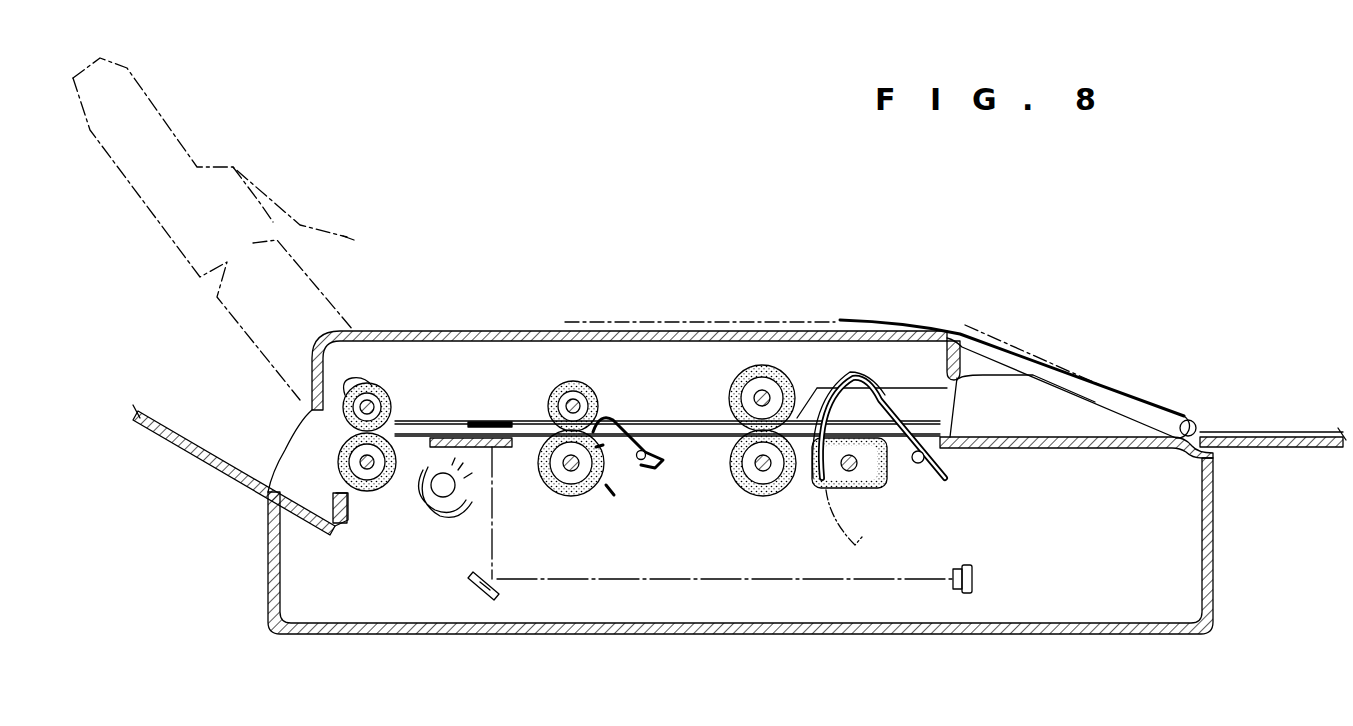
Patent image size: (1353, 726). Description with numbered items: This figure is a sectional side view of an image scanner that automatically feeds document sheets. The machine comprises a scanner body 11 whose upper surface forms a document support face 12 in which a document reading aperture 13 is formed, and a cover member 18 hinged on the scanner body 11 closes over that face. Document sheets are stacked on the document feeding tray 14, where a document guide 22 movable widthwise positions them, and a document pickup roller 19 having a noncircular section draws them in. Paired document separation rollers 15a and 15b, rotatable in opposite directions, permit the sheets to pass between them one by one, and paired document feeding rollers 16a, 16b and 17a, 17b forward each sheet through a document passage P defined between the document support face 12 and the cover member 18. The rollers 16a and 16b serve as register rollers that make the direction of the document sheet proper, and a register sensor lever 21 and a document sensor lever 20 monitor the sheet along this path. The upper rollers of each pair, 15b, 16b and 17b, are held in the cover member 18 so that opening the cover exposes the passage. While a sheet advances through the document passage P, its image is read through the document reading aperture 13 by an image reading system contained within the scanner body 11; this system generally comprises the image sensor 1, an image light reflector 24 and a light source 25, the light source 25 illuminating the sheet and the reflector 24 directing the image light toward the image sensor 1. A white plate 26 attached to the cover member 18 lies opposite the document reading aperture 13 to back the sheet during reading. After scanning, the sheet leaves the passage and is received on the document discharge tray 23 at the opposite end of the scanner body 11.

The image sensor 1 is at (975, 578).
The scanner body 11 is at (1230, 592).
The document support face 12 is at (680, 432).
The document reading aperture 13 is at (457, 424).
The document feeding tray 14 is at (1262, 435).
The document separation roller 15a is at (763, 496).
The document separation roller 15b is at (762, 366).
The document feeding roller 16a is at (560, 496).
The document feeding roller 16b is at (583, 381).
The document feeding roller 17a is at (338, 462).
The document feeding roller 17b is at (343, 406).
The cover member 18 is at (393, 328).
The document pickup roller 19 is at (866, 488).
The document sensor lever 20 is at (856, 378).
The register sensor lever 21 is at (603, 470).
The document guide 22 is at (826, 322).
The document discharge tray 23 is at (185, 442).
The image light reflector 24 is at (486, 596).
The light source 25 is at (440, 505).
The white plate 26 is at (498, 436).
The document passage P is at (944, 416).